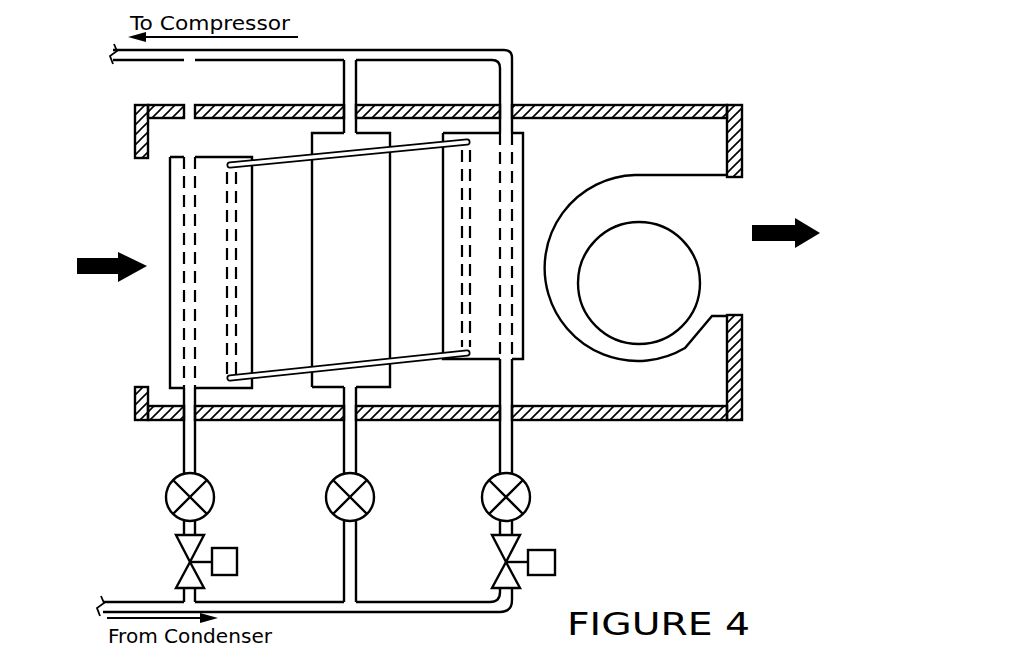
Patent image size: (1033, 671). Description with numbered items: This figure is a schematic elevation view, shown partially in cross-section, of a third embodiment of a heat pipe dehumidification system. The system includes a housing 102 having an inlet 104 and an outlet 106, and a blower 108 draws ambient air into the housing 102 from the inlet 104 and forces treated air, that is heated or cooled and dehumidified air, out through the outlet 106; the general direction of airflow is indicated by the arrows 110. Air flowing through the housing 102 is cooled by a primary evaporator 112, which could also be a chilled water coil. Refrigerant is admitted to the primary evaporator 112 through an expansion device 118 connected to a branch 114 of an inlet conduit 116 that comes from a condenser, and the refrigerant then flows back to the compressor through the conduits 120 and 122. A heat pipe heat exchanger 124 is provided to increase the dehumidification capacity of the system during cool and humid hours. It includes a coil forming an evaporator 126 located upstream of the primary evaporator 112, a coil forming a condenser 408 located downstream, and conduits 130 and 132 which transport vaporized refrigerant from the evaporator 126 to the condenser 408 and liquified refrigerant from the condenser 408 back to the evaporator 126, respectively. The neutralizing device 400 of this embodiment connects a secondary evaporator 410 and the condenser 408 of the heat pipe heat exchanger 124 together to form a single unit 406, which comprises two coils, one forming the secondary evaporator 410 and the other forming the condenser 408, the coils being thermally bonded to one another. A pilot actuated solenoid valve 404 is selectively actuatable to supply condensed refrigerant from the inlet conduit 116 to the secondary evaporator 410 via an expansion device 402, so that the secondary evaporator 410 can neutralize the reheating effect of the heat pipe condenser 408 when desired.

The housing 102 is at (742, 378).
The inlet 104 is at (143, 158).
The outlet 106 is at (733, 315).
The blower 108 is at (655, 357).
The arrows 110 is at (107, 277).
The primary evaporator 112 is at (353, 238).
The branch 114 is at (360, 577).
The inlet conduit 116 is at (310, 598).
The expansion device 118 is at (377, 497).
The conduit 120 is at (360, 80).
The conduit 122 is at (375, 45).
The heat pipe heat exchanger 124 is at (148, 226).
The evaporator 126 is at (232, 272).
The conduit 130 is at (292, 157).
The conduit 132 is at (348, 379).
The neutralizing device 400 is at (578, 515).
The expansion device 402 is at (210, 483).
The pilot actuated solenoid valve 404 is at (233, 547).
The single unit 406 is at (450, 312).
The condenser 408 is at (463, 243).
The secondary evaporator 410 is at (190, 340).